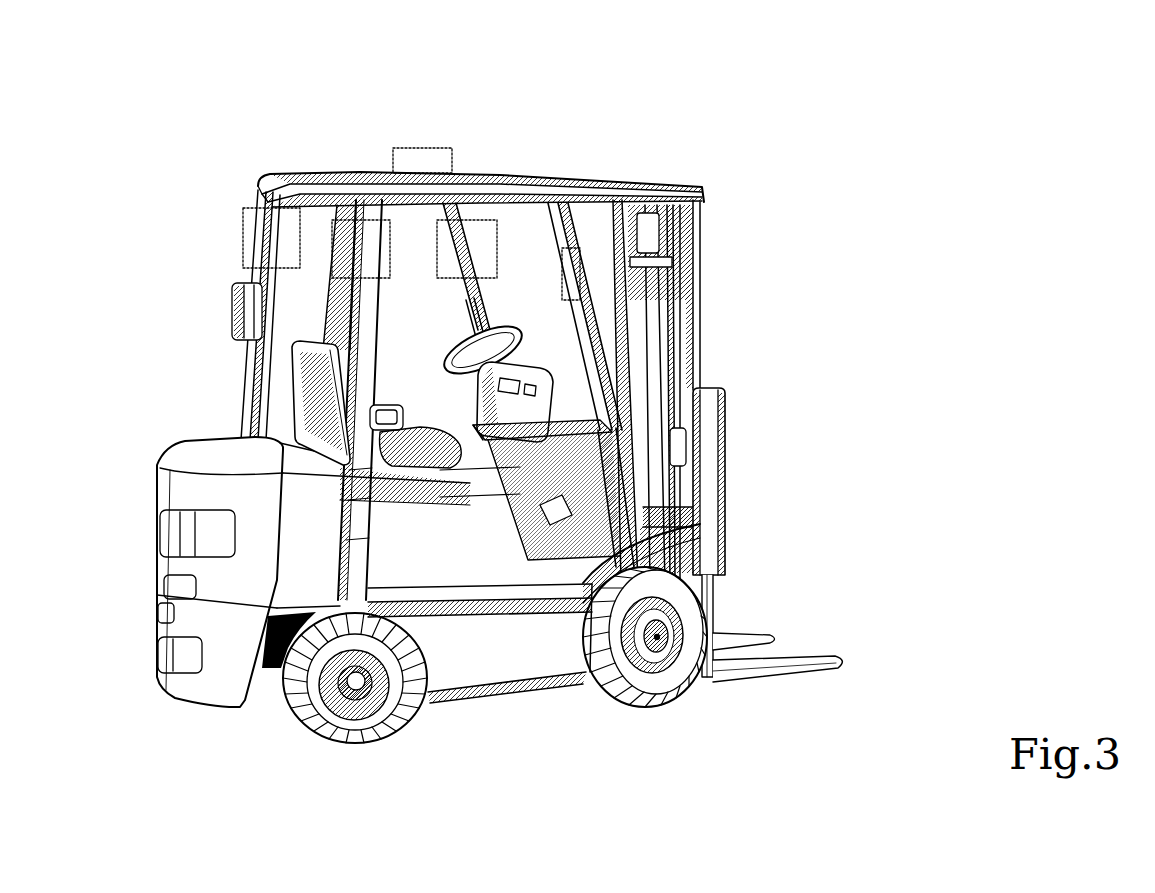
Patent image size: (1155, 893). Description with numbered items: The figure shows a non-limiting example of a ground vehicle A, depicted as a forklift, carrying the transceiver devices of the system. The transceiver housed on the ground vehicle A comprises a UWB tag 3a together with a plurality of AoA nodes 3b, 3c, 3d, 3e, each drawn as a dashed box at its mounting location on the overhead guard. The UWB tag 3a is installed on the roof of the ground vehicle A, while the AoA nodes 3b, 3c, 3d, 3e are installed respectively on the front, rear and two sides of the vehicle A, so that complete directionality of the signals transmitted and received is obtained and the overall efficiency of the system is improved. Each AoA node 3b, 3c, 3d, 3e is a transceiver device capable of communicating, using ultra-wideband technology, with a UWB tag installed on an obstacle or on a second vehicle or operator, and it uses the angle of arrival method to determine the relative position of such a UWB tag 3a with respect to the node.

The ground vehicle A is at (660, 185).
The UWB tag 3a is at (423, 148).
The AoA node 3b is at (562, 278).
The AoA node 3c is at (242, 232).
The AoA node 3d is at (333, 240).
The AoA node 3e is at (482, 218).